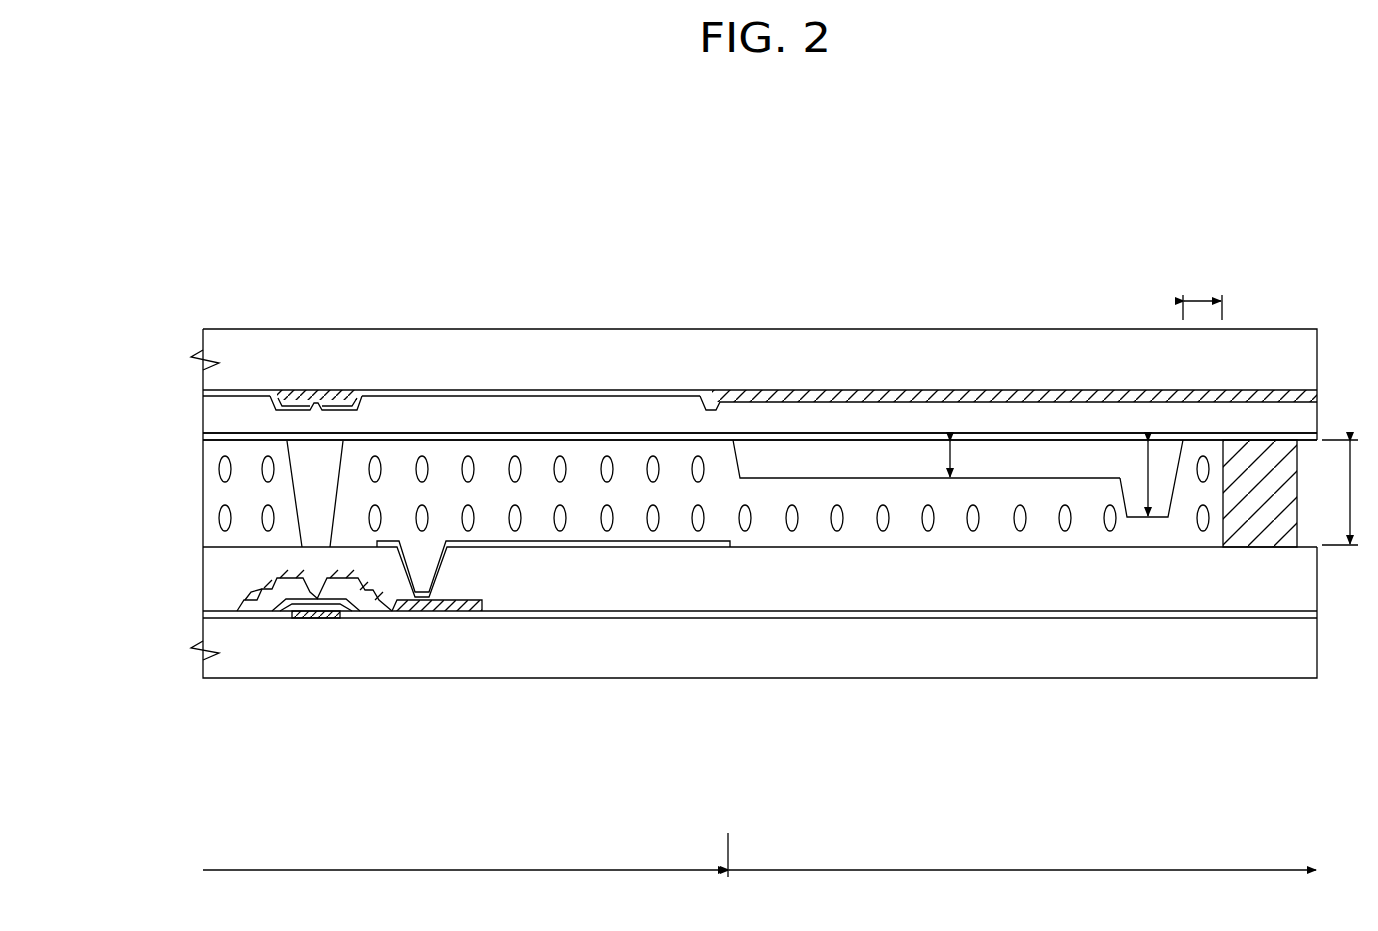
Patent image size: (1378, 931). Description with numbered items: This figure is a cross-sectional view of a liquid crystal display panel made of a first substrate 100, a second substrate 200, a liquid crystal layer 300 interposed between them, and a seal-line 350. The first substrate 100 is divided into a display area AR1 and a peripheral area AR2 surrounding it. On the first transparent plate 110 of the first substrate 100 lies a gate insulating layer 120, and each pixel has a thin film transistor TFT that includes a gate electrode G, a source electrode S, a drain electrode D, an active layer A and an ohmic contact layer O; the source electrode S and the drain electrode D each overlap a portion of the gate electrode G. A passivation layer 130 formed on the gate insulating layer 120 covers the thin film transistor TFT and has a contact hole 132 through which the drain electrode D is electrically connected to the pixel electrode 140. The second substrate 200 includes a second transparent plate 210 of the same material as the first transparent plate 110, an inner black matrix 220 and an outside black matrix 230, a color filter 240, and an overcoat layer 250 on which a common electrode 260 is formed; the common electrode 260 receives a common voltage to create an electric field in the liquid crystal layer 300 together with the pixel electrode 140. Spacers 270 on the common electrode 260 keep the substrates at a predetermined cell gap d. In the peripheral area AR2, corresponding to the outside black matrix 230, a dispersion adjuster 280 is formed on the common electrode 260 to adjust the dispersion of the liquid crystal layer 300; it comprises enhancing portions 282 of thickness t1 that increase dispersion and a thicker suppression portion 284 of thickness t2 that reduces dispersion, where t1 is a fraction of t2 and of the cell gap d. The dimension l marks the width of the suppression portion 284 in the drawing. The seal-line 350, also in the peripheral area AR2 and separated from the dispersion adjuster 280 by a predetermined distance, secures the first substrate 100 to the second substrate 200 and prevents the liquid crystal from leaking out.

The second substrate 200 is at (1111, 232).
The second transparent plate 210 is at (628, 360).
The inner black matrix 220 is at (316, 390).
The outside black matrix 230 is at (746, 392).
The color filter 240 is at (567, 392).
The overcoat layer 250 is at (508, 415).
The common electrode 260 is at (447, 433).
The spacers 270 is at (330, 472).
The dispersion adjuster 280 is at (1160, 272).
The enhancing portions 282 is at (1050, 455).
The suppression portion 284 is at (1134, 492).
The liquid crystal layer 300 is at (862, 530).
The seal-line 350 is at (1270, 527).
The first substrate 100 is at (302, 774).
The first transparent plate 110 is at (717, 652).
The gate insulating layer 120 is at (646, 612).
The passivation layer 130 is at (587, 575).
The contact hole 132 is at (428, 560).
The pixel electrode 140 is at (527, 548).
The thin film transistor TFT is at (236, 728).
The source electrode S is at (243, 612).
The active layer A is at (273, 612).
The gate electrode G is at (312, 614).
The ohmic contact layer O is at (353, 612).
The drain electrode D is at (394, 612).
The thickness of enhancing portions t1 is at (965, 459).
The thickness of suppression portion t2 is at (1159, 478).
The cell gap d is at (1347, 492).
The groove width l is at (1202, 295).
The display area AR1 is at (465, 855).
The peripheral area AR2 is at (1022, 855).